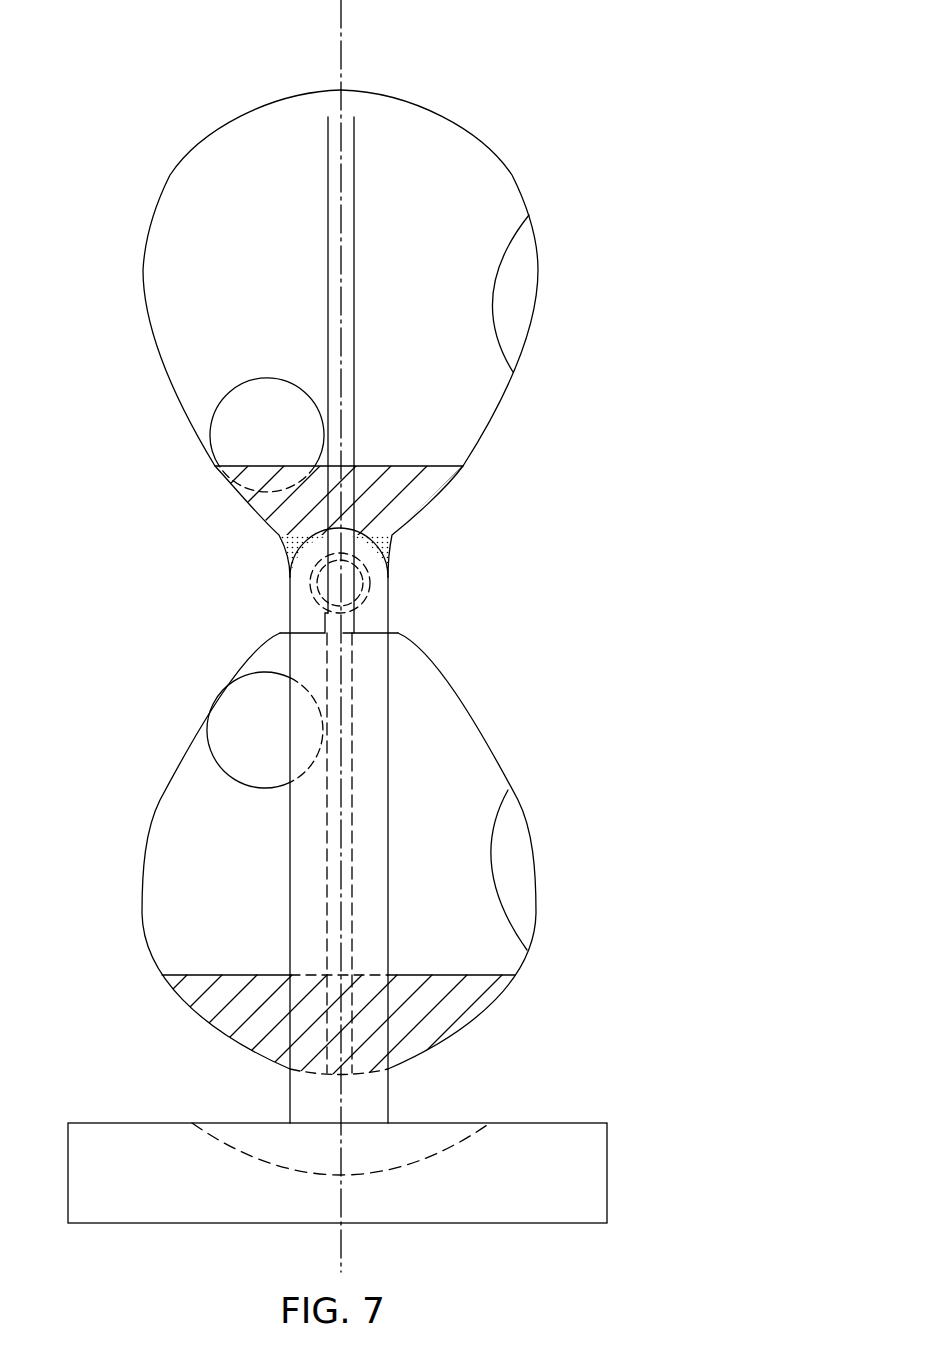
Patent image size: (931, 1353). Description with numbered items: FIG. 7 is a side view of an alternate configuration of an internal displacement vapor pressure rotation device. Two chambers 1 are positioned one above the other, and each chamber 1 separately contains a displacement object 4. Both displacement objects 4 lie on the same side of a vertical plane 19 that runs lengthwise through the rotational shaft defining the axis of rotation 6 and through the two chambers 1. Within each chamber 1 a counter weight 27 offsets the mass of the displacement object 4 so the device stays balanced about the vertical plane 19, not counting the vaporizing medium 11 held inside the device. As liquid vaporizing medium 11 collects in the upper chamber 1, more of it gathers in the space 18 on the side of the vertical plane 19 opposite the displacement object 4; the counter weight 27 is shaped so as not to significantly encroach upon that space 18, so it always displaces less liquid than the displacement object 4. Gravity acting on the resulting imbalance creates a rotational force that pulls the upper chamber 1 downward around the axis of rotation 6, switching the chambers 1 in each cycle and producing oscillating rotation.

The vertical plane 19 is at (341, 53).
The chamber 1 is at (487, 436).
The counter weight 27 is at (513, 300).
The displacement object 4 is at (218, 402).
The space 18 is at (390, 483).
The vaporizing medium 11 is at (292, 510).
The axis of rotation 6 is at (322, 583).